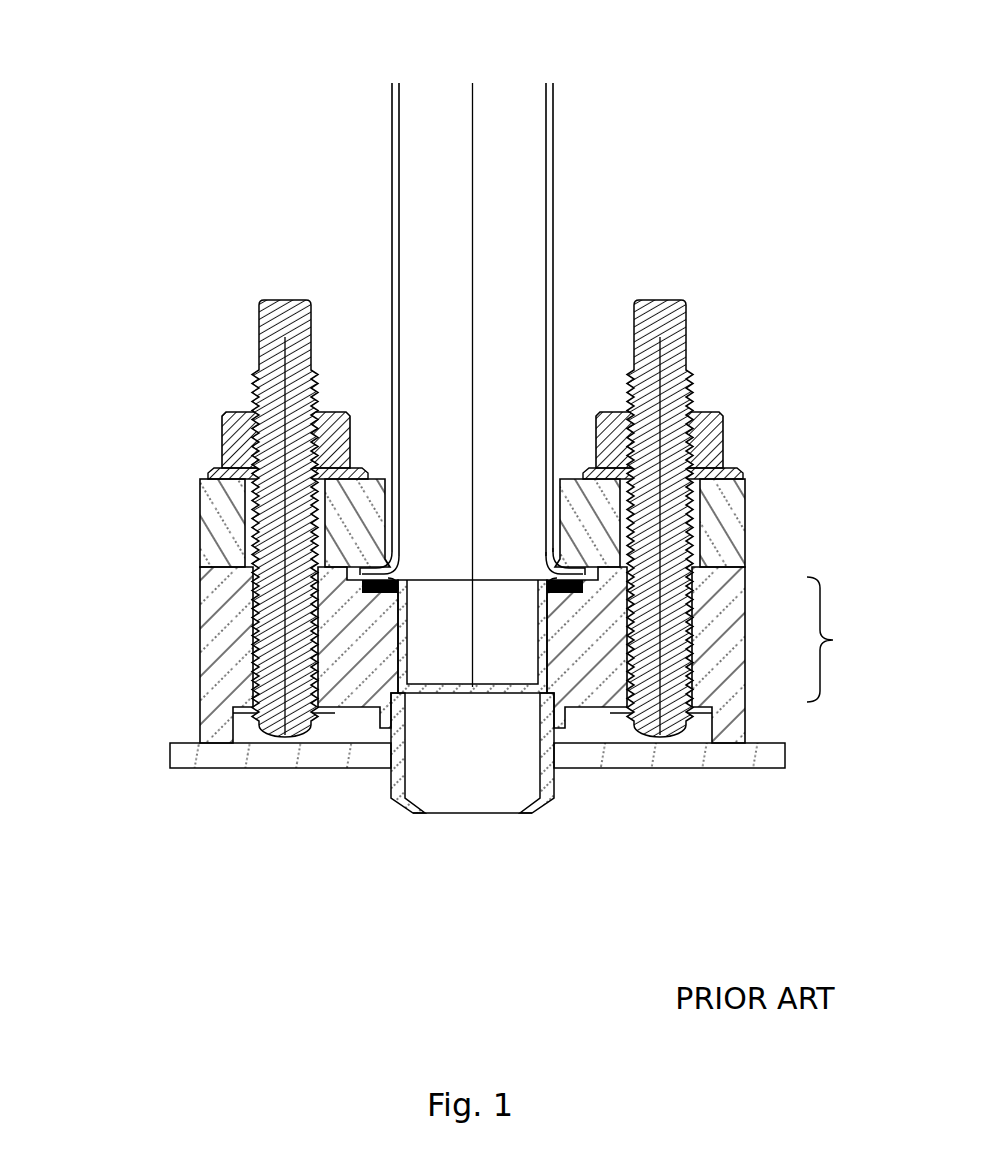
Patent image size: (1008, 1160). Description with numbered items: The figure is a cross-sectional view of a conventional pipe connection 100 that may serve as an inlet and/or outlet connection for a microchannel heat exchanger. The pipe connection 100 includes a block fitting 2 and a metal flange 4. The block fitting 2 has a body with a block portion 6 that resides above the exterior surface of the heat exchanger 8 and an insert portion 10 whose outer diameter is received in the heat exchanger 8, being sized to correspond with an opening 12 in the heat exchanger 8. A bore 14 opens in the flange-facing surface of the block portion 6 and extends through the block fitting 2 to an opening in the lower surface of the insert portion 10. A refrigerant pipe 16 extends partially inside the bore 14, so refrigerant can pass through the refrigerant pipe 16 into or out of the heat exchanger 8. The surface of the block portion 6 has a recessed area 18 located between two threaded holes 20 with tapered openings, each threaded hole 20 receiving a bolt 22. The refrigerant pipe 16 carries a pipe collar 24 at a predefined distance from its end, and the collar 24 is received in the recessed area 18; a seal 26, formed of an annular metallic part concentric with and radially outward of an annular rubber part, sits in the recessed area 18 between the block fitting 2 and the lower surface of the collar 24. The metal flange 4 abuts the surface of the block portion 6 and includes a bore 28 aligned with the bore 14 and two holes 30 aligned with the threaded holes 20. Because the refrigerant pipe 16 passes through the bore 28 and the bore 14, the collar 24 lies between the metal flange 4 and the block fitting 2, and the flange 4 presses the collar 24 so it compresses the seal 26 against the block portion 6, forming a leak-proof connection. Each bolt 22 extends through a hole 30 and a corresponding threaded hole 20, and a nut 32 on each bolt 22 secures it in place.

The pipe connection 100 is at (270, 192).
The block fitting 2 is at (227, 599).
The metal flange 4 is at (210, 528).
The block portion 6 is at (837, 639).
The heat exchanger 8 is at (205, 758).
The insert portion 10 is at (547, 777).
The opening 12 is at (388, 766).
The bore 14 is at (492, 777).
The refrigerant pipe 16 is at (390, 290).
The recessed area 18 is at (595, 575).
The threaded holes 20 is at (253, 657).
The bolt 22 is at (690, 370).
The pipe collar 24 is at (360, 570).
The seal 26 is at (567, 595).
The bore 28 is at (560, 480).
The holes 30 is at (203, 481).
The nut 32 is at (222, 413).